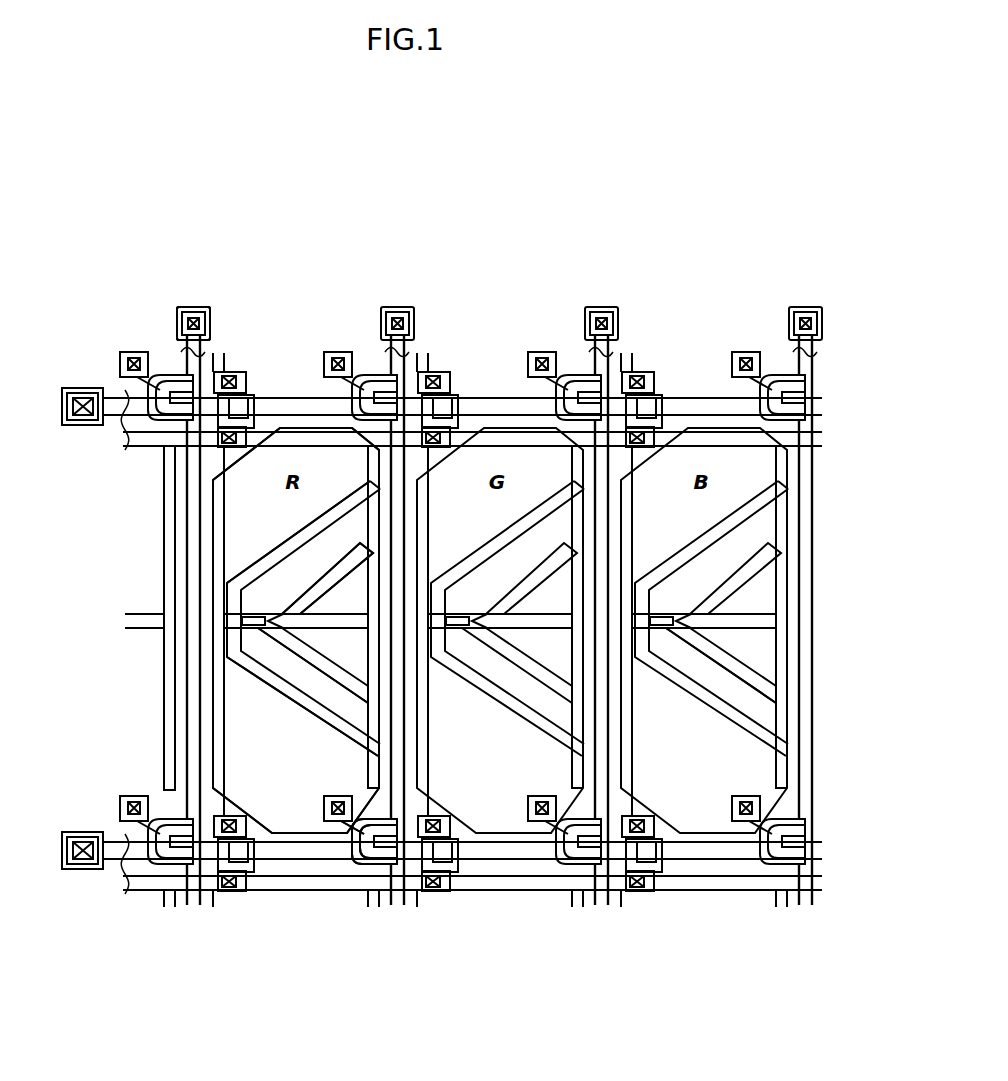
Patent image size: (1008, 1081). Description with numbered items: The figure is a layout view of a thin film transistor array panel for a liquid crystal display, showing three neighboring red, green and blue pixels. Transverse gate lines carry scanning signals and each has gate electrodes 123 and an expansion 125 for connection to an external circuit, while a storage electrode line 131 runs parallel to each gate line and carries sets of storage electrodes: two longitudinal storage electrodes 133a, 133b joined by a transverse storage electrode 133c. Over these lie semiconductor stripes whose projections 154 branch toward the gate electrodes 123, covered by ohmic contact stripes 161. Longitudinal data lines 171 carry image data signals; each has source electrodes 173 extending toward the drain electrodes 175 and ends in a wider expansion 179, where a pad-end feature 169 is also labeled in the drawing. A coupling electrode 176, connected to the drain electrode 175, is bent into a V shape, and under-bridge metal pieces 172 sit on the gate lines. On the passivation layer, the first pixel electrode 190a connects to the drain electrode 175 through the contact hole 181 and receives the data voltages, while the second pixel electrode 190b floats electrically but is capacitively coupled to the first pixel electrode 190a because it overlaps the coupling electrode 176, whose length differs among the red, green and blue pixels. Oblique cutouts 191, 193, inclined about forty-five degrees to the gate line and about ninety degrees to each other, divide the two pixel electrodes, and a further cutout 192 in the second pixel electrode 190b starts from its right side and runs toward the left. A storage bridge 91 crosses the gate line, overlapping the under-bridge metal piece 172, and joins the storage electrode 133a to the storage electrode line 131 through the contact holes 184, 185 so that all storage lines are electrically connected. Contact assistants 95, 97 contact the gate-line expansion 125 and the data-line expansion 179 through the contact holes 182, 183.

The storage bridge 91 is at (247, 886).
The contact assistant 95 is at (62, 852).
The contact assistant 97 is at (182, 307).
The gate electrode 123 is at (362, 864).
The expansion of gate line 125 is at (85, 869).
The storage electrode line 131 is at (262, 436).
The storage electrode 133a is at (218, 537).
The storage electrode 133b is at (370, 602).
The transverse storage electrode 133c is at (249, 614).
The projection of semiconductor stripe 154 is at (352, 868).
The ohmic contact stripe 161 is at (188, 588).
The end portion of ohmic contact 169 is at (178, 323).
The data line 171 is at (183, 660).
The under-bridge metal piece 172 is at (224, 857).
The source electrode 173 is at (379, 860).
The drain electrode 175 is at (346, 825).
The coupling electrode 176 is at (767, 687).
The expansion of data line 179 is at (203, 307).
The contact hole 181 is at (341, 796).
The contact hole 182 is at (83, 831).
The contact hole 183 is at (211, 323).
The contact hole 184 is at (236, 812).
The contact hole 185 is at (232, 897).
The first pixel electrode 190a is at (301, 837).
The second pixel electrode 190b is at (303, 702).
The cutout 191 is at (270, 705).
The cutout 192 is at (342, 638).
The cutout 193 is at (265, 549).